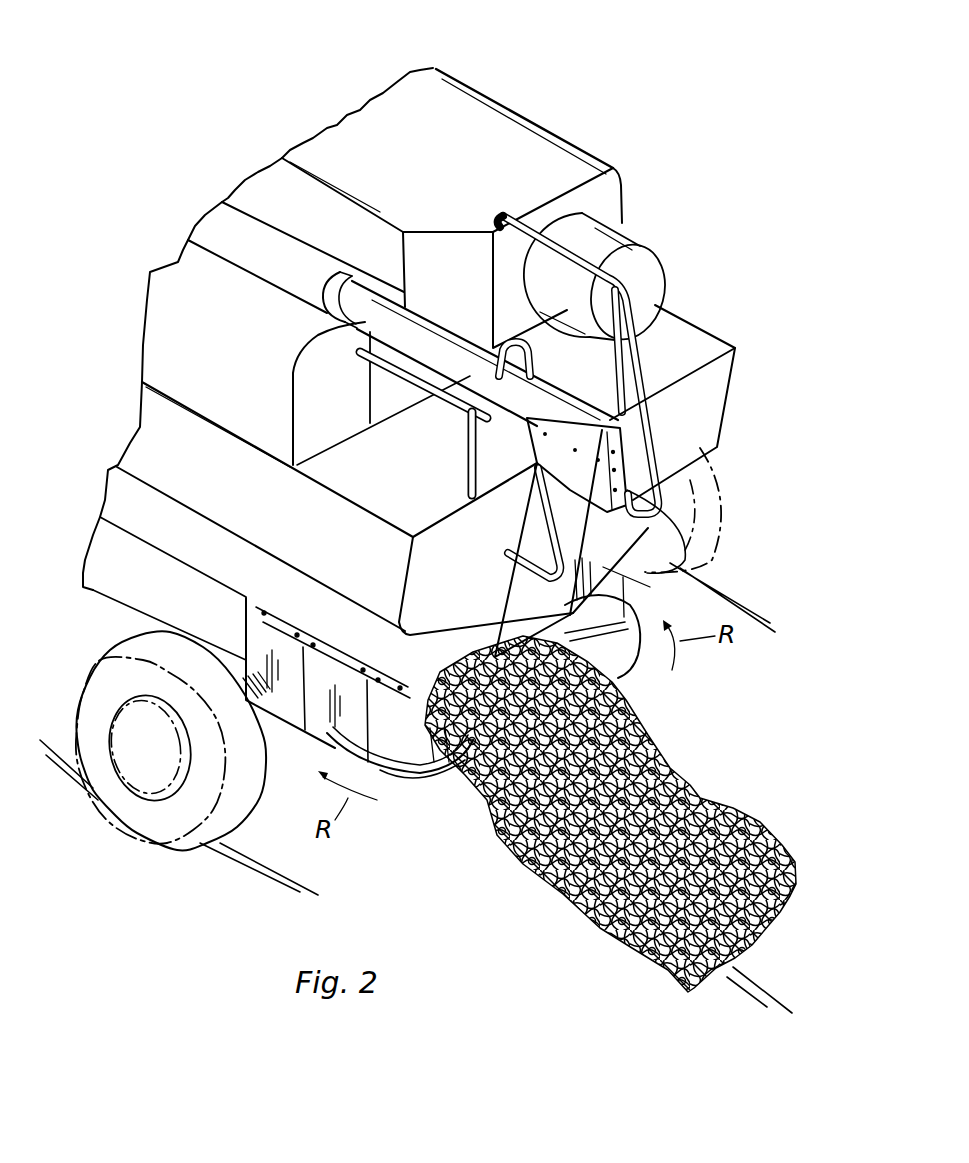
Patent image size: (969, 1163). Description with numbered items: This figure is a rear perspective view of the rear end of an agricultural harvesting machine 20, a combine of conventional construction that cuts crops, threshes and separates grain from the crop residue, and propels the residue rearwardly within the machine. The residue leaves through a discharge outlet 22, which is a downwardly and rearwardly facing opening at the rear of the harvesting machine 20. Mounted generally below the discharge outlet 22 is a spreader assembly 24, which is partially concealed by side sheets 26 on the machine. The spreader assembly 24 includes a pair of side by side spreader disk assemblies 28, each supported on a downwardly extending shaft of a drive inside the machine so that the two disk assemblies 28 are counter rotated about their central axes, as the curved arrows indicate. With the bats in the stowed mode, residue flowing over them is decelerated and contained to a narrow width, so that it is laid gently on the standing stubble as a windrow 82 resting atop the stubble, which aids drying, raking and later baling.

The agricultural harvesting machine 20 is at (563, 82).
The discharge outlet 22 is at (600, 590).
The spreader assembly 24 is at (410, 792).
The side sheets 26 is at (350, 727).
The spreader disk assemblies 28 is at (632, 680).
The windrow 82 is at (717, 800).